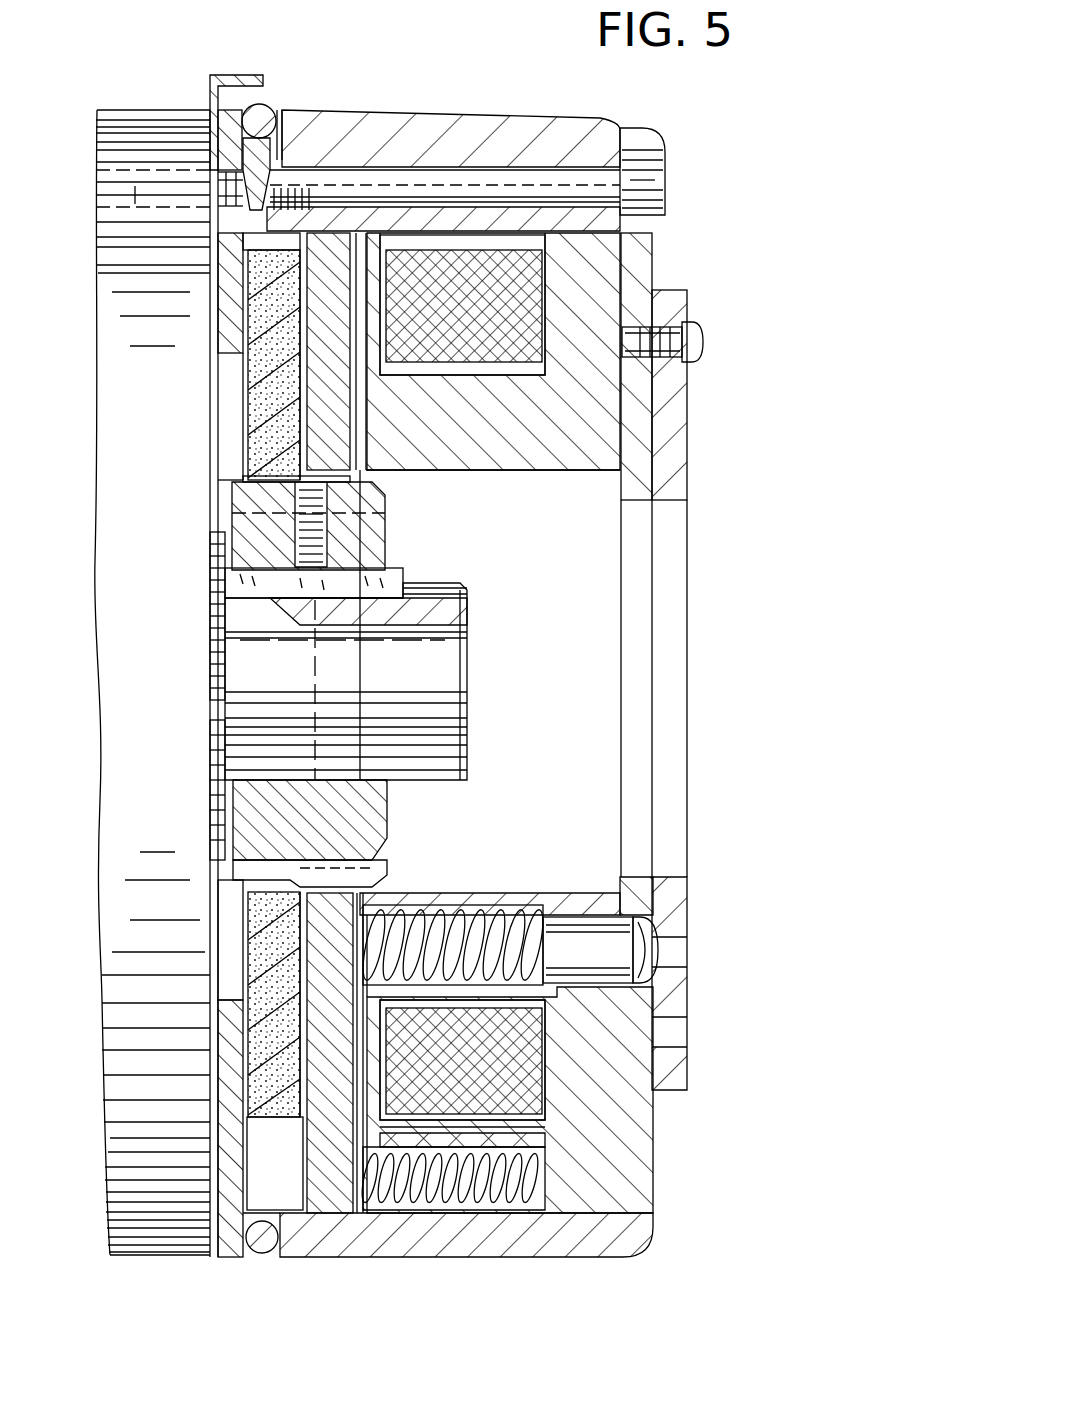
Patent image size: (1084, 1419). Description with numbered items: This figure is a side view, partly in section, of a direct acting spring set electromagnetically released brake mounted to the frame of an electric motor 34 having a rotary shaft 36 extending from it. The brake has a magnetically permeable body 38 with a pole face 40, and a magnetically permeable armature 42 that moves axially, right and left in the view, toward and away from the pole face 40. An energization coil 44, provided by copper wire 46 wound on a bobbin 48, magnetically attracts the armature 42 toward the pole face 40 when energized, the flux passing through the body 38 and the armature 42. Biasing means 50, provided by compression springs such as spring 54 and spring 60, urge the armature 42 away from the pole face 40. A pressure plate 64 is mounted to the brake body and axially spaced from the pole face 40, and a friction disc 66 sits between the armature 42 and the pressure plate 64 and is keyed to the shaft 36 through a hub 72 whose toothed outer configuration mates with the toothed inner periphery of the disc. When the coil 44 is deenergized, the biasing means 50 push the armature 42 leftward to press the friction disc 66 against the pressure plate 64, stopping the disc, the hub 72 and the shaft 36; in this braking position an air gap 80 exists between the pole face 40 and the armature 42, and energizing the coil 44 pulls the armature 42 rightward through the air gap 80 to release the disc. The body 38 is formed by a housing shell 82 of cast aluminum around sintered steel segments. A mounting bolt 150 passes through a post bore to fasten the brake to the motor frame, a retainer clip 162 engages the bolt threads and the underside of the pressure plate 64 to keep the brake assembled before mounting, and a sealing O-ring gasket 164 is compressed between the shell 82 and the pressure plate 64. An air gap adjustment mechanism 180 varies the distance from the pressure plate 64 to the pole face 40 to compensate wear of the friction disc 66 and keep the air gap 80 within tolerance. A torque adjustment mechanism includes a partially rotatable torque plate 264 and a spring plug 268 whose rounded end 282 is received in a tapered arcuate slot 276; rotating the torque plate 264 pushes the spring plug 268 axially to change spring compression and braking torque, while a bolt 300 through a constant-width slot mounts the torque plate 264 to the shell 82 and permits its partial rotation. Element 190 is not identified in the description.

The electric motor 34 is at (170, 110).
The rotary shaft 36 is at (470, 700).
The magnetically permeable body 38 is at (525, 445).
The pole face 40 is at (355, 455).
The armature 42 is at (320, 1215).
The energization coil 44 is at (555, 1095).
The copper wire 46 is at (553, 1125).
The bobbin 48 is at (590, 1180).
The biasing means 50 is at (480, 912).
The compression spring 54 is at (357, 920).
The compression spring 60 is at (492, 1232).
The pressure plate 64 is at (232, 1252).
The friction disc 66 is at (283, 1118).
The hub 72 is at (382, 827).
The air gap 80 is at (384, 488).
The housing shell 82 is at (460, 1257).
The mounting bolt 150 is at (647, 180).
The retainer clip 162 is at (214, 74).
The sealing O-ring gasket 164 is at (262, 1254).
The air gap adjustment mechanism 180 is at (282, 152).
The cover plate 190 is at (355, 117).
The torque plate 264 is at (677, 293).
The spring plug 268 is at (577, 947).
The arcuate slot 276 is at (680, 953).
The rounded end 282 is at (650, 935).
The bolt 300 is at (700, 345).